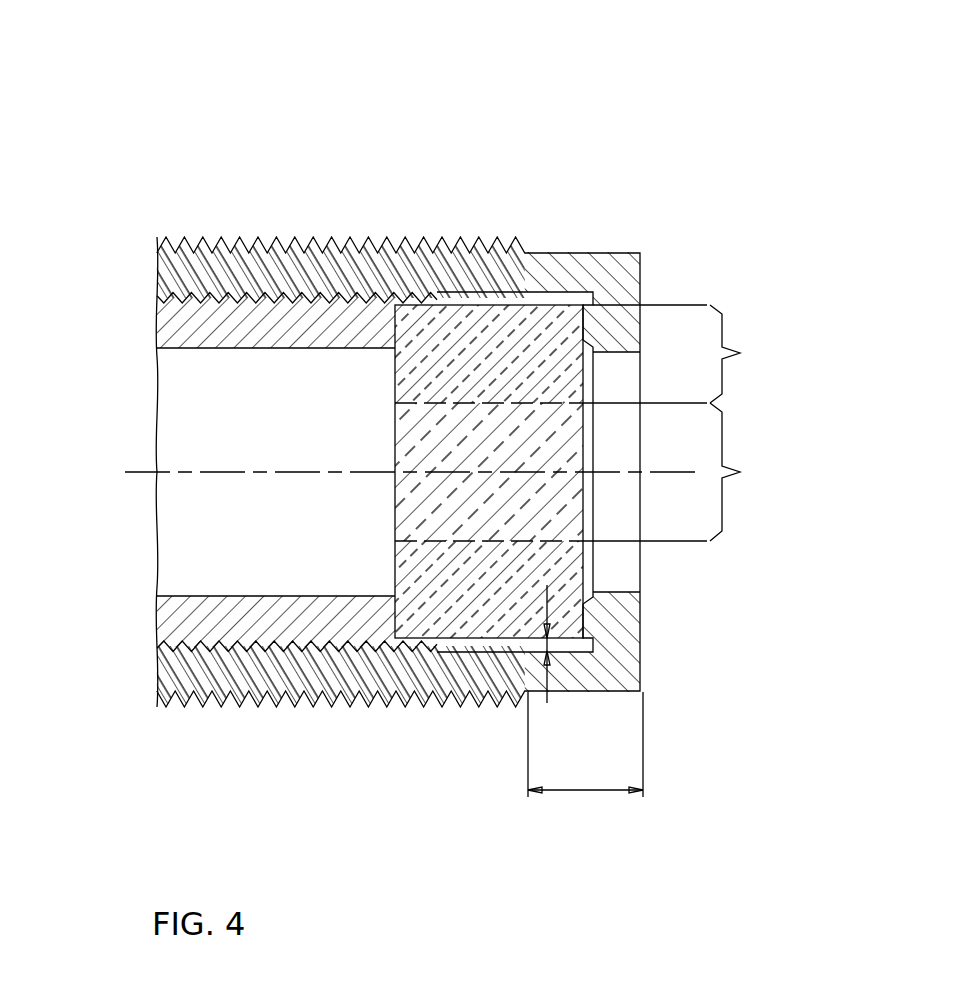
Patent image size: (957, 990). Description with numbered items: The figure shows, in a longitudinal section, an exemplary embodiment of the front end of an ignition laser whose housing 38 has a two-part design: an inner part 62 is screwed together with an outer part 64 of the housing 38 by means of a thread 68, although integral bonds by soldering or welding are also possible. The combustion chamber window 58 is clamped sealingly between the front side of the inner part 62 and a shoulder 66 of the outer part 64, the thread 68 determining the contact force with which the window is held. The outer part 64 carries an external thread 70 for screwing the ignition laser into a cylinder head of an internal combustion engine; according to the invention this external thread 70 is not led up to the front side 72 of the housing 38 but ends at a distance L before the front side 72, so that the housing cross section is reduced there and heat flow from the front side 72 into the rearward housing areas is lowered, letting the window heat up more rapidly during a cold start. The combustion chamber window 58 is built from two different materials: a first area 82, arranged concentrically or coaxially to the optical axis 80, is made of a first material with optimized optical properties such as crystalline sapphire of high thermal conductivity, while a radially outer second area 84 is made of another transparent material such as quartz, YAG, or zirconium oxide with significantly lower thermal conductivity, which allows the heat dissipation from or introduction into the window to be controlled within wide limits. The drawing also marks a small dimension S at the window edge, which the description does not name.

The housing 38 is at (512, 158).
The combustion chamber window 58 is at (465, 440).
The inner part 62 is at (200, 620).
The outer part 64 is at (285, 676).
The shoulder 66 is at (590, 328).
The thread 68 is at (283, 295).
The external thread 70 is at (428, 702).
The front side 72 is at (640, 627).
The optical axis 80 is at (226, 472).
The first area 82 is at (679, 472).
The second area 84 is at (679, 354).
The gap width S is at (552, 645).
The distance L is at (590, 797).